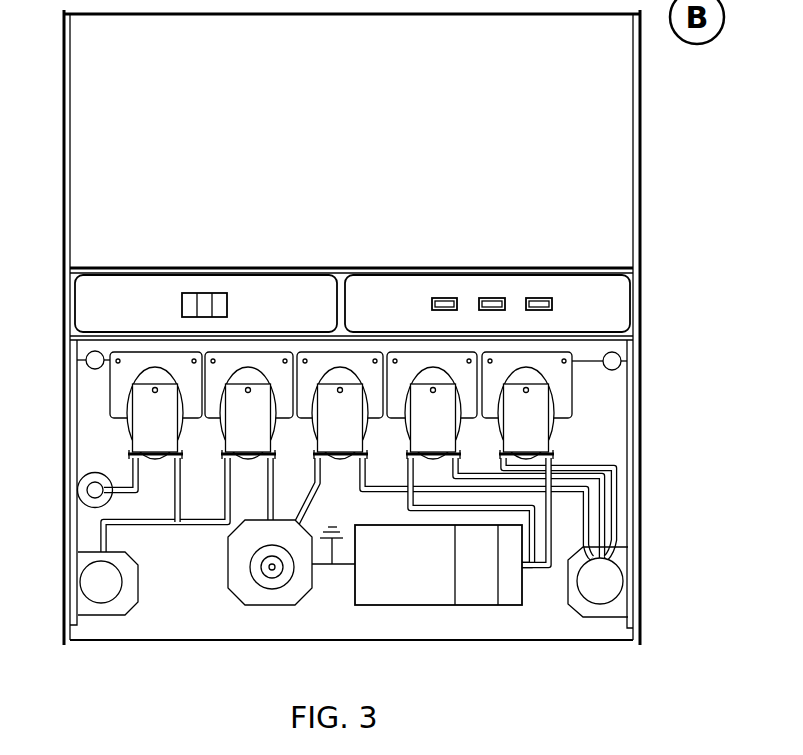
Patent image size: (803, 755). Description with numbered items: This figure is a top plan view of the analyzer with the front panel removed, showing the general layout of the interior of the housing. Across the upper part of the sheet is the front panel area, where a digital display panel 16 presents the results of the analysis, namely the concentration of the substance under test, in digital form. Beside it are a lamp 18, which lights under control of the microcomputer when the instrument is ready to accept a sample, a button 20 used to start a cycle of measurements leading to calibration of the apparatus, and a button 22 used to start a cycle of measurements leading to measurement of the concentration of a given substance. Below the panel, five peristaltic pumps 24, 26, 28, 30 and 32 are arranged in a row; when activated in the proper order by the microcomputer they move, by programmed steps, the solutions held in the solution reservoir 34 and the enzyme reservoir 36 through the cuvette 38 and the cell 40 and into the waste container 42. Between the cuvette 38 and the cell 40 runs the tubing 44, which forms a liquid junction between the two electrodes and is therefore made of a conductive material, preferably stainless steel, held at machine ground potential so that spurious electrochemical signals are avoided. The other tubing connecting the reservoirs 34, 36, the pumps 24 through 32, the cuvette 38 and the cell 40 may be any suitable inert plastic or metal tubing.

The digital display panel 16 is at (200, 283).
The lamp 18 is at (447, 283).
The button 20 is at (497, 283).
The button 22 is at (548, 283).
The peristaltic pump 24 is at (142, 430).
The peristaltic pump 26 is at (235, 430).
The peristaltic pump 28 is at (327, 430).
The peristaltic pump 30 is at (420, 430).
The peristaltic pump 32 is at (513, 430).
The solution reservoir 34 is at (87, 602).
The enzyme reservoir 36 is at (80, 488).
The cuvette 38 is at (242, 553).
The cell 40 is at (433, 585).
The waste container 42 is at (617, 558).
The tubing 44 is at (343, 565).